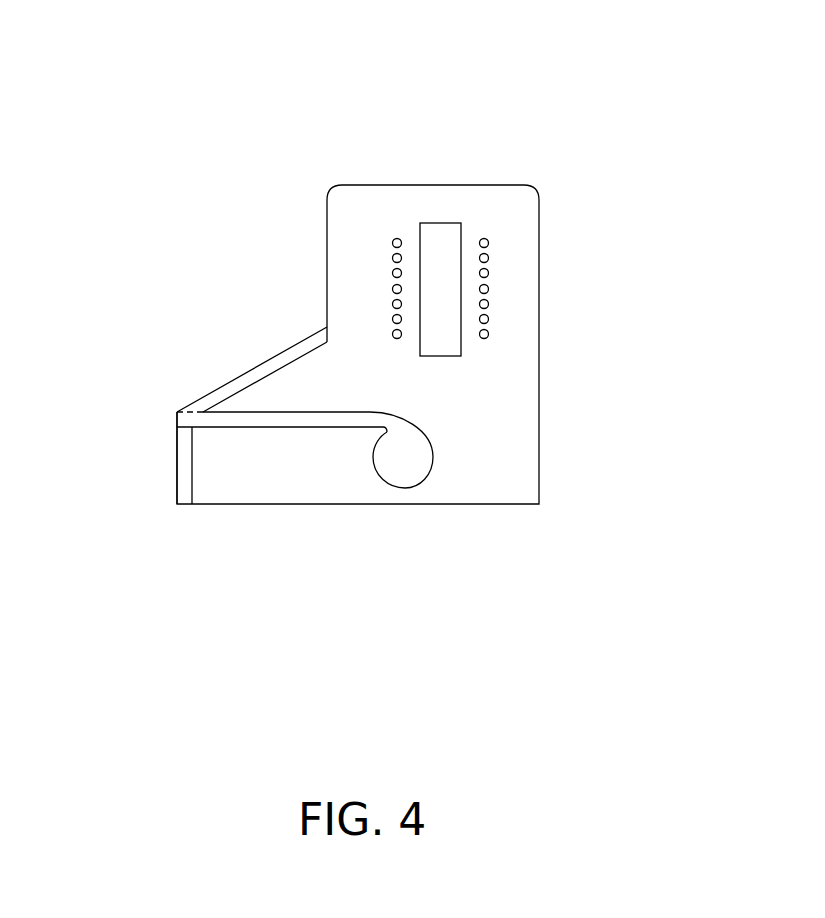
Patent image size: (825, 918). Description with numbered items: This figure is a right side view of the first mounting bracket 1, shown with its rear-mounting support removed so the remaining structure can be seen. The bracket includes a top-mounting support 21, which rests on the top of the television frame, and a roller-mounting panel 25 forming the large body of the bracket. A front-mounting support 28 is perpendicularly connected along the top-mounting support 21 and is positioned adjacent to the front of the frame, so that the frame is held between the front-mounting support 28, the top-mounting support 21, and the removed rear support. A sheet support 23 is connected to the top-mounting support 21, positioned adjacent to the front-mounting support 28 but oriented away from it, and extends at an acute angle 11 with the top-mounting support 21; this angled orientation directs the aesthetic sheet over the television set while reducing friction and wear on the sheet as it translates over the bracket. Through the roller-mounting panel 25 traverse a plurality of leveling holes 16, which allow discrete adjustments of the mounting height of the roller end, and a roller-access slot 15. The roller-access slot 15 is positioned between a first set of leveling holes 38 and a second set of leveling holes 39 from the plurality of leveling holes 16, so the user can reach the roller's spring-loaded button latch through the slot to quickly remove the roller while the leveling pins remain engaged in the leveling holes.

The first mounting bracket 1 is at (650, 71).
The acute angle 11 is at (260, 410).
The roller-access slot 15 is at (439, 238).
The plurality of leveling holes 16 is at (454, 287).
The top-mounting support 21 is at (315, 418).
The sheet support 23 is at (215, 398).
The roller-mounting panel 25 is at (413, 344).
The front-mounting support 28 is at (187, 490).
The first set of leveling holes 38 is at (396, 226).
The second set of leveling holes 39 is at (485, 349).